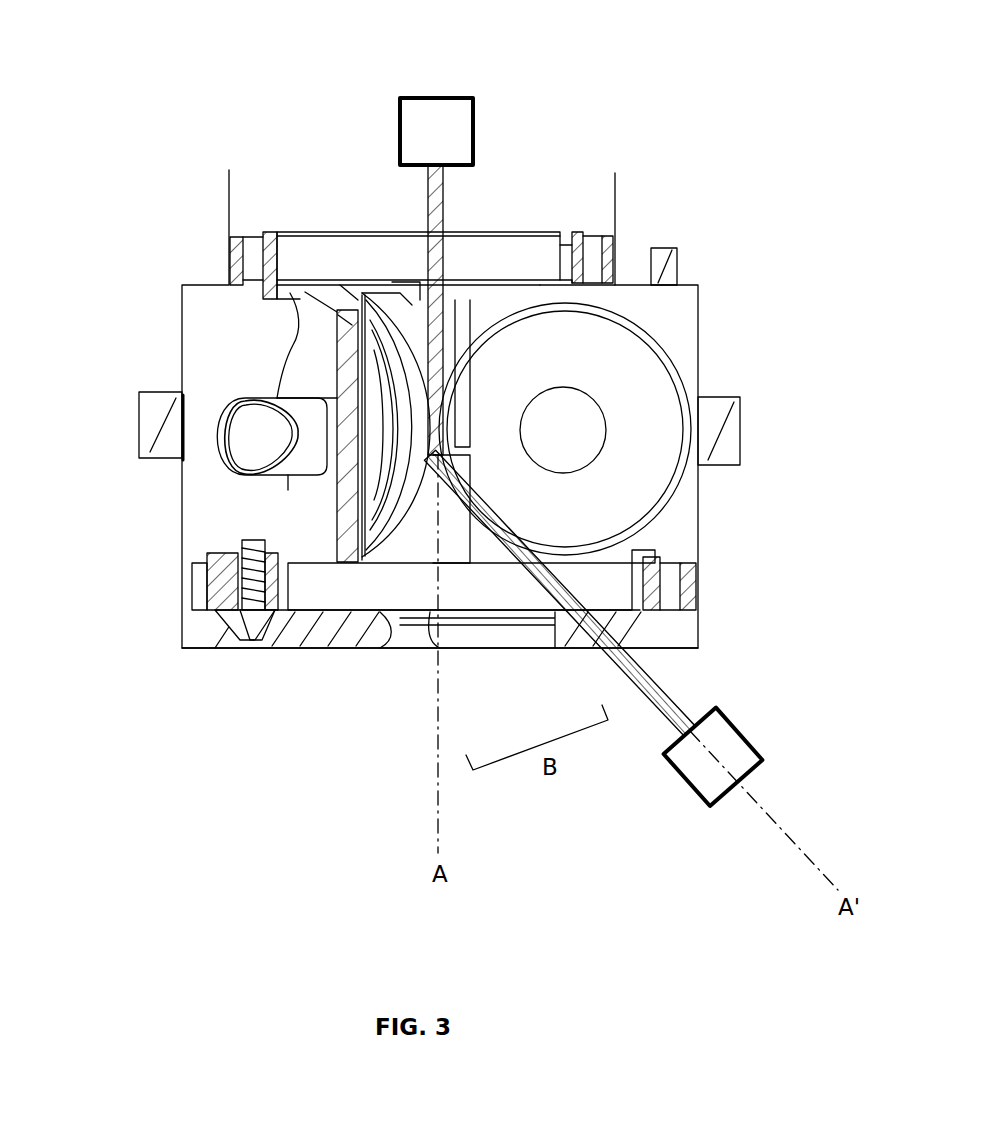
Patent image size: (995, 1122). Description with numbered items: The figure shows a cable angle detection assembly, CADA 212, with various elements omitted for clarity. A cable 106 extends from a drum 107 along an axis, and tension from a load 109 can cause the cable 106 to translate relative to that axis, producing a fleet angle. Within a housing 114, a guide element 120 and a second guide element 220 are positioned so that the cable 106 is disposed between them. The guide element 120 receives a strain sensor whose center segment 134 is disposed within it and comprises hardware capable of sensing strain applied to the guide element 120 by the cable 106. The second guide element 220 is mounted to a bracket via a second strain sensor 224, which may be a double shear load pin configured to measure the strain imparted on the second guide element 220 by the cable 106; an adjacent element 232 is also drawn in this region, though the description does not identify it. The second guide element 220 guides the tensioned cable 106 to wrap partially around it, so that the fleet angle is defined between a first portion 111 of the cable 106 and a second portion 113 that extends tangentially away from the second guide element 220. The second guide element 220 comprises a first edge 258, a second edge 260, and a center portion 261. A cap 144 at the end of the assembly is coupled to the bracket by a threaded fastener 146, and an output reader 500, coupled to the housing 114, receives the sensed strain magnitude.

The cable 106 is at (680, 690).
The drum 107 is at (473, 114).
The load 109 is at (745, 728).
The first portion of the cable 111 is at (445, 202).
The second portion of the cable 113 is at (623, 690).
The housing 114 is at (702, 326).
The guide element 120 is at (633, 484).
The center segment 134 is at (580, 438).
The cap 144 is at (342, 648).
The fastener 146 is at (253, 596).
The CADA 212 is at (328, 112).
The second guide element 220 is at (405, 514).
The second strain sensor 224 is at (260, 388).
The seal 232 is at (243, 445).
The first edge 258 is at (292, 292).
The second edge 260 is at (393, 280).
The center portion 261 is at (352, 322).
The output reader 500 is at (675, 250).